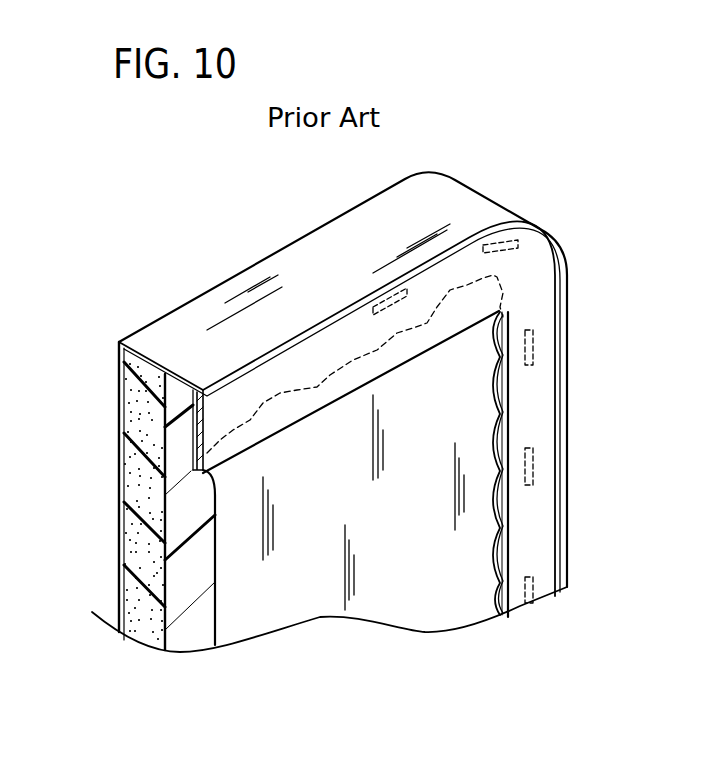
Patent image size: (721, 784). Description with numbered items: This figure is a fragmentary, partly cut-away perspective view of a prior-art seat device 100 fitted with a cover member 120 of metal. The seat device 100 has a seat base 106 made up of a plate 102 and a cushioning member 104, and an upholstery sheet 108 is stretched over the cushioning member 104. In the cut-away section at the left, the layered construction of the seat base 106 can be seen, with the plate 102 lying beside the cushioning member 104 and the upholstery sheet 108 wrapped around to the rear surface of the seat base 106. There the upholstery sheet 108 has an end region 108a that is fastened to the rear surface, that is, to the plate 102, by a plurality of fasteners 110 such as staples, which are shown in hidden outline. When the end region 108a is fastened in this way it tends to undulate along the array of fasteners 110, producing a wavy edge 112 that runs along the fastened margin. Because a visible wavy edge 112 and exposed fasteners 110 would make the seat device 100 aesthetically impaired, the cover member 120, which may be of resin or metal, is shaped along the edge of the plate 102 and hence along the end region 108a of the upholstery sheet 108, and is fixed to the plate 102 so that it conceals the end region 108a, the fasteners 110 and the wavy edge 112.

The seat device 100 is at (566, 131).
The plate 102 is at (190, 628).
The cushioning member 104 is at (145, 628).
The seat base 106 is at (210, 700).
The upholstery sheet 108 is at (203, 466).
The end region 108a is at (200, 440).
The fasteners 110 is at (263, 402).
The wavy edge 112 is at (493, 384).
The cover member 120 is at (543, 515).